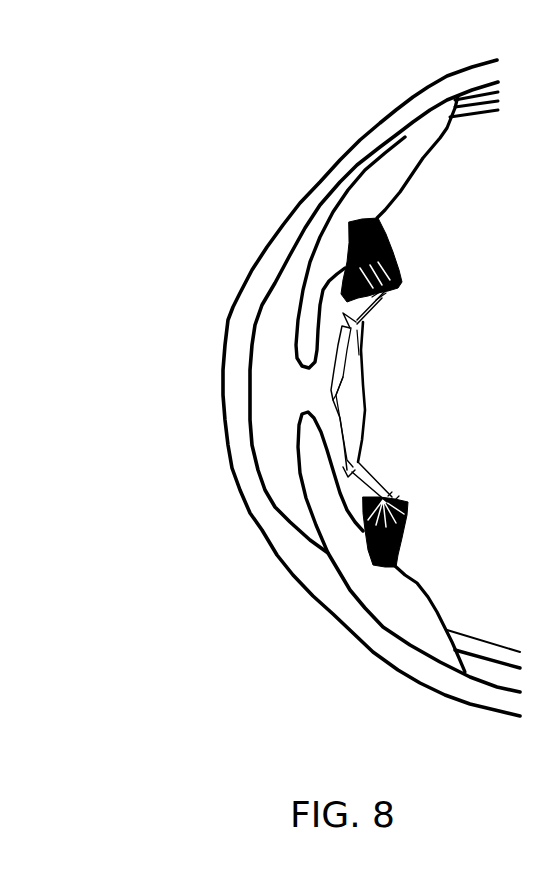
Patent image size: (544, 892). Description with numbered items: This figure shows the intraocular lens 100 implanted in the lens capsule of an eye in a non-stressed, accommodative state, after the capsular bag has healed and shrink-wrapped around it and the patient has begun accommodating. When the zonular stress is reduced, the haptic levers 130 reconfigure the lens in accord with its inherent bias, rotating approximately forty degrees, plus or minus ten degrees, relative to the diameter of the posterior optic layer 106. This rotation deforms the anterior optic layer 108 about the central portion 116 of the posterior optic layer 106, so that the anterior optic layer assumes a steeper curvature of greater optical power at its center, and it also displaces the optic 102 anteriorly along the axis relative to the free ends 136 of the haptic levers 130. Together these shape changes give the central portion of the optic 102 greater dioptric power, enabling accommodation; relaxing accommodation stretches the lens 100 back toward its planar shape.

The lens 100 is at (303, 395).
The optic 102 is at (405, 395).
The posterior optic layer 106 is at (350, 400).
The anterior optic layer 108 is at (338, 425).
The central portion 116 is at (338, 394).
The haptic levers 130 is at (372, 322).
The free ends 136 is at (381, 297).